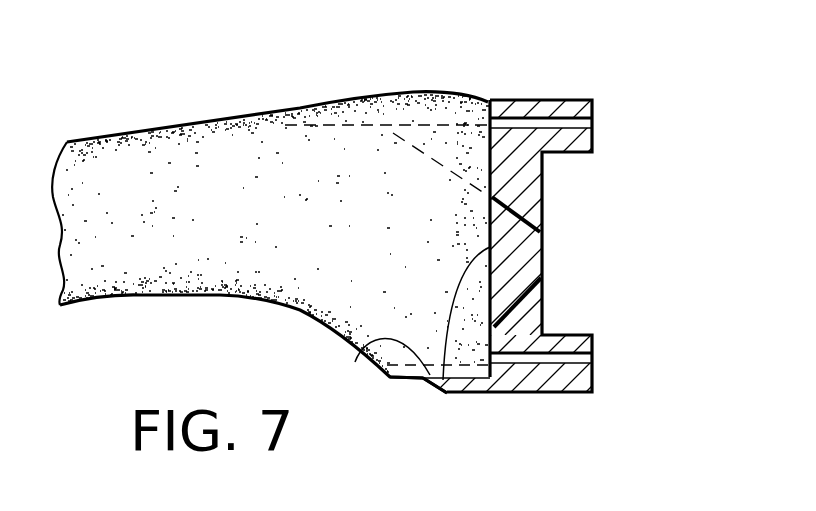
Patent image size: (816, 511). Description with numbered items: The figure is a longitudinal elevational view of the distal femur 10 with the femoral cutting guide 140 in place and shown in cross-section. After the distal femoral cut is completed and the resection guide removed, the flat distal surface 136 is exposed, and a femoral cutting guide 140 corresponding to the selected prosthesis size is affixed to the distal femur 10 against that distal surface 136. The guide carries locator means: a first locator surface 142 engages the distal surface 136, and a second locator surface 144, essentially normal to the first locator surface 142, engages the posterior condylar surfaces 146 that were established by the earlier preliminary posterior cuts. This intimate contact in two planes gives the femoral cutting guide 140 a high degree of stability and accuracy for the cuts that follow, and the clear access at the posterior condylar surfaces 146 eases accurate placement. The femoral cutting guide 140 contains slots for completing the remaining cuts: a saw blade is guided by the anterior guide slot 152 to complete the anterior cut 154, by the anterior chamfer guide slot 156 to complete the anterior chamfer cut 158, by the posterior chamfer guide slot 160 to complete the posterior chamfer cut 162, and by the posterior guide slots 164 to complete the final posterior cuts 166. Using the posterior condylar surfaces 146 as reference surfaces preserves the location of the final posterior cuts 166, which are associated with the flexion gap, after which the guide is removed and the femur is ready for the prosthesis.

The distal femur 10 is at (130, 134).
The anterior cut 154 is at (352, 124).
The anterior chamfer cut 158 is at (407, 141).
The femoral cutting guide 140 is at (594, 98).
The anterior guide slot 152 is at (583, 121).
The distal surface 136 is at (545, 180).
The anterior chamfer guide slot 156 is at (523, 208).
The posterior chamfer guide slot 160 is at (543, 292).
The posterior guide slots 164 is at (583, 360).
The posterior chamfer cut 162 is at (481, 373).
The first locator surface 142 is at (443, 360).
The second locator surface 144 is at (362, 347).
The final posterior cuts 166 is at (404, 380).
The posterior condylar surfaces 146 is at (415, 385).